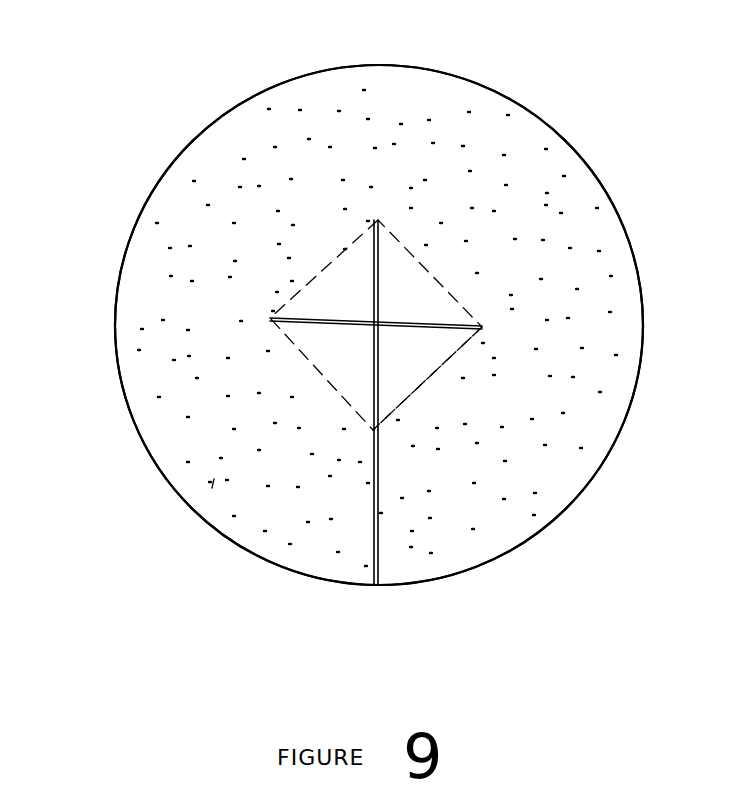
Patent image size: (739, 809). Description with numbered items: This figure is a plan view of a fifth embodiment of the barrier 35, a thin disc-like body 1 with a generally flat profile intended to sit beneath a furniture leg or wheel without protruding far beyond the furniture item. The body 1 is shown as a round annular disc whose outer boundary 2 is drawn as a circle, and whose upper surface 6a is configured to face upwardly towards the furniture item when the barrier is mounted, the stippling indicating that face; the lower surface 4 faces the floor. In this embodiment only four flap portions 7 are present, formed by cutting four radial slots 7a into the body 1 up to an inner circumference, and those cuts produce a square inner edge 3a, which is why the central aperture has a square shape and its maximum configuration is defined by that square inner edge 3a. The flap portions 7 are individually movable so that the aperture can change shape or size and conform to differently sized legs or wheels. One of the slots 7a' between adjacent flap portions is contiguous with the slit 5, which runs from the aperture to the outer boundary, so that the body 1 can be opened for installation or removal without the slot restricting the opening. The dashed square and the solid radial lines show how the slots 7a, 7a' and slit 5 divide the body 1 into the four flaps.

The float assembly 35 is at (248, 70).
The body 1 is at (233, 145).
The circular body 2 is at (132, 227).
The flap portions 7 is at (410, 282).
The radial slots 7a is at (502, 224).
The slot contiguous with the slit 7a' is at (520, 449).
The inner edge 3a is at (437, 377).
The slit 5 is at (375, 548).
The interior surface 4 is at (206, 485).
The surface dot region 6a is at (290, 547).